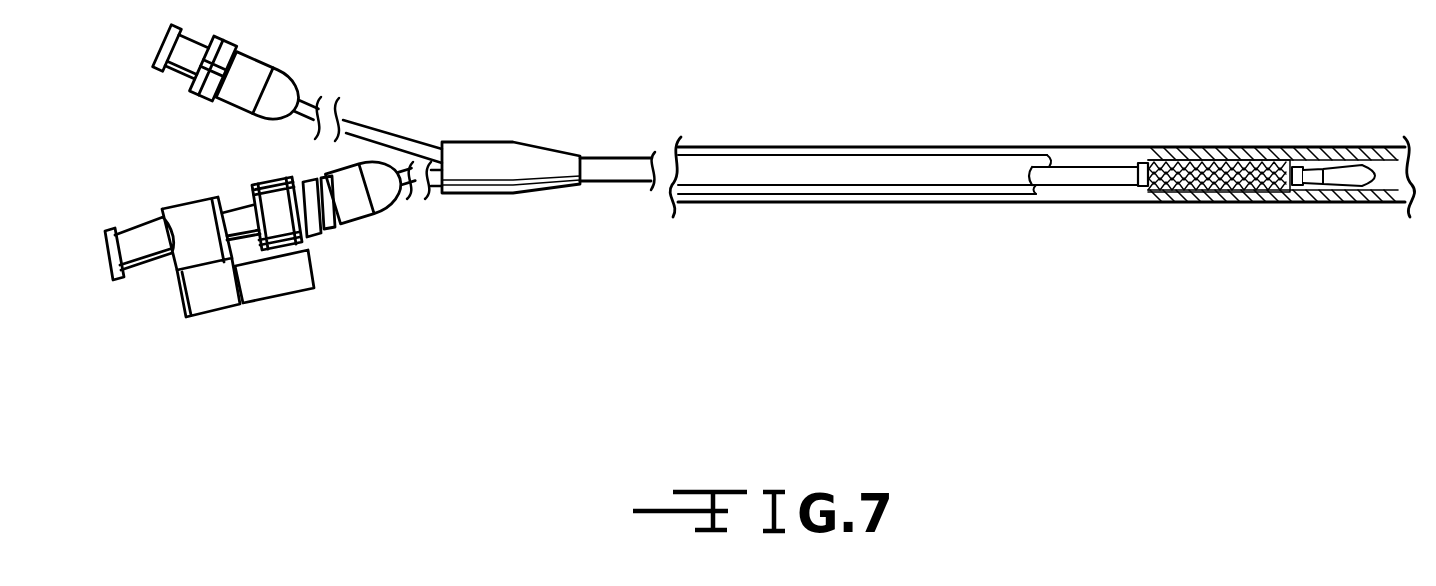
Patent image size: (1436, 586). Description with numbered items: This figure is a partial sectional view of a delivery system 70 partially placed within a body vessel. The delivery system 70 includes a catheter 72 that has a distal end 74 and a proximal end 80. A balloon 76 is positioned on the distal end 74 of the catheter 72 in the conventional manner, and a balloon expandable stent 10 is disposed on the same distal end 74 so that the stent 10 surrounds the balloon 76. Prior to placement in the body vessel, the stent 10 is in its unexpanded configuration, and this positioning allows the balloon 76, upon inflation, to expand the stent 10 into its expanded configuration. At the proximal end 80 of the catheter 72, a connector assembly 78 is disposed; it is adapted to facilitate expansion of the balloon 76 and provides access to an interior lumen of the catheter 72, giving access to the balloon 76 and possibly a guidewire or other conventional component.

The delivery system 70 is at (745, 78).
The catheter 72 is at (627, 157).
The distal end 74 is at (1308, 170).
The balloon 76 is at (1142, 163).
The balloon expandable stent 10 is at (1177, 157).
The connector assembly 78 is at (268, 152).
The proximal end 80 is at (463, 196).